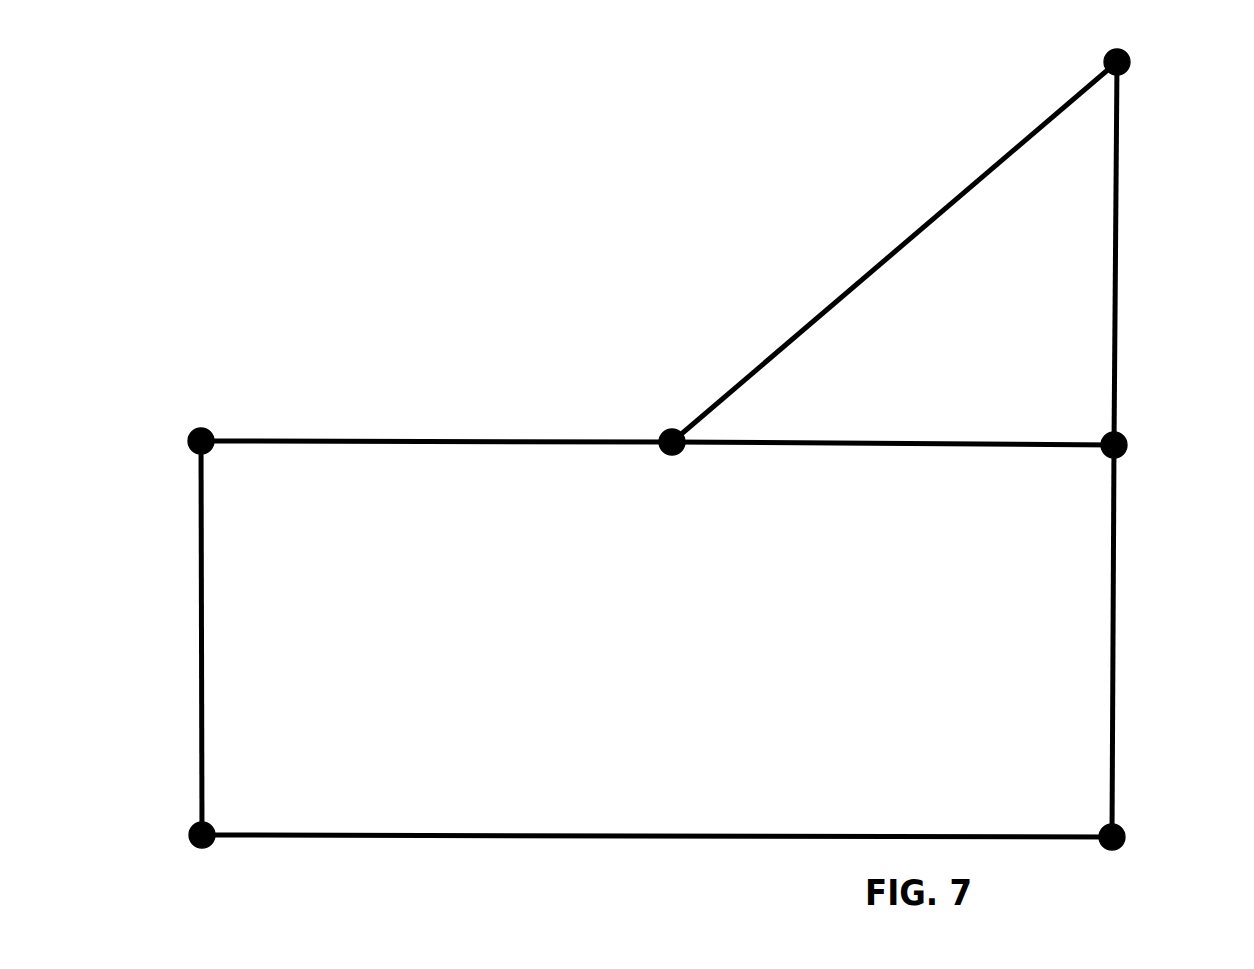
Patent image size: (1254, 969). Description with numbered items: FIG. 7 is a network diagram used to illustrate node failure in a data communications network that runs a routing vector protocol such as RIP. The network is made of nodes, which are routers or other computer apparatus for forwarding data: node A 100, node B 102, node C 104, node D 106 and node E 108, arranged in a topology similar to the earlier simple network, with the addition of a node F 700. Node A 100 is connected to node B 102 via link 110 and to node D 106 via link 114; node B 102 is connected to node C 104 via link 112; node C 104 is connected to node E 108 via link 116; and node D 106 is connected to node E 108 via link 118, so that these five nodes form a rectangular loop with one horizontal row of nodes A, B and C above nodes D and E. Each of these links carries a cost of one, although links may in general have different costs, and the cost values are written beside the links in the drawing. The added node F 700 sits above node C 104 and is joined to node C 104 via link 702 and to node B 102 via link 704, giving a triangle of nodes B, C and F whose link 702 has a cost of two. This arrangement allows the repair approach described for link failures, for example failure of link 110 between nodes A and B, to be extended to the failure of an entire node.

The node A 100 is at (291, 380).
The node B 102 is at (693, 440).
The node C 104 is at (1213, 417).
The node D 106 is at (190, 836).
The node E 108 is at (1217, 806).
The node F 700 is at (1211, 40).
The link 110 is at (495, 448).
The link 112 is at (962, 447).
The link 114 is at (300, 652).
The link 116 is at (1110, 676).
The link 118 is at (950, 828).
The link 702 is at (1217, 232).
The link 704 is at (893, 250).